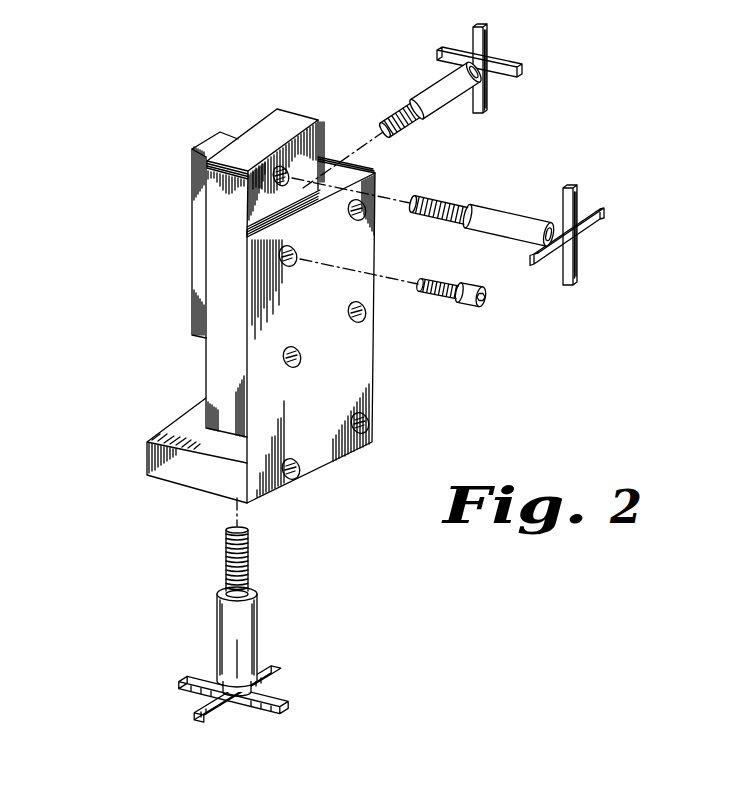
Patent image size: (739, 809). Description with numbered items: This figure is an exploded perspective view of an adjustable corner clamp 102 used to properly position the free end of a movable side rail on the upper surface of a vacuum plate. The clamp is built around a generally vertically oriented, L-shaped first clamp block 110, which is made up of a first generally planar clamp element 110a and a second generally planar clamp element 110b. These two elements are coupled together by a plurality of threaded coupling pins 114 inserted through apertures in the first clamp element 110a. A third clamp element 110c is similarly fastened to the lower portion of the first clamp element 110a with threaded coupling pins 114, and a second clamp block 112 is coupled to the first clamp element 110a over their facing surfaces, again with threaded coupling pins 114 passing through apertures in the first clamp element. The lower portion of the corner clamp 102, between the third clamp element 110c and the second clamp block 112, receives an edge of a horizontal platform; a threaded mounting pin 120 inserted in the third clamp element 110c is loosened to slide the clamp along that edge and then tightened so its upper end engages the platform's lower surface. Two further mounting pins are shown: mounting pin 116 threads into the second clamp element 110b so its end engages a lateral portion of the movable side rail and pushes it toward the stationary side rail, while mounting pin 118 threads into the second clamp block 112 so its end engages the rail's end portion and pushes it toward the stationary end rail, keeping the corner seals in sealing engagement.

The adjustable corner clamp 102 is at (150, 172).
The first clamp block 110 is at (383, 419).
The first clamp element 110a is at (343, 365).
The second clamp element 110b is at (200, 264).
The third clamp element 110c is at (192, 435).
The second clamp block 112 is at (262, 135).
The threaded coupling pin 114 is at (455, 298).
The mounting pin 116 is at (412, 88).
The mounting pin 118 is at (517, 202).
The threaded mounting pin 120 is at (215, 632).